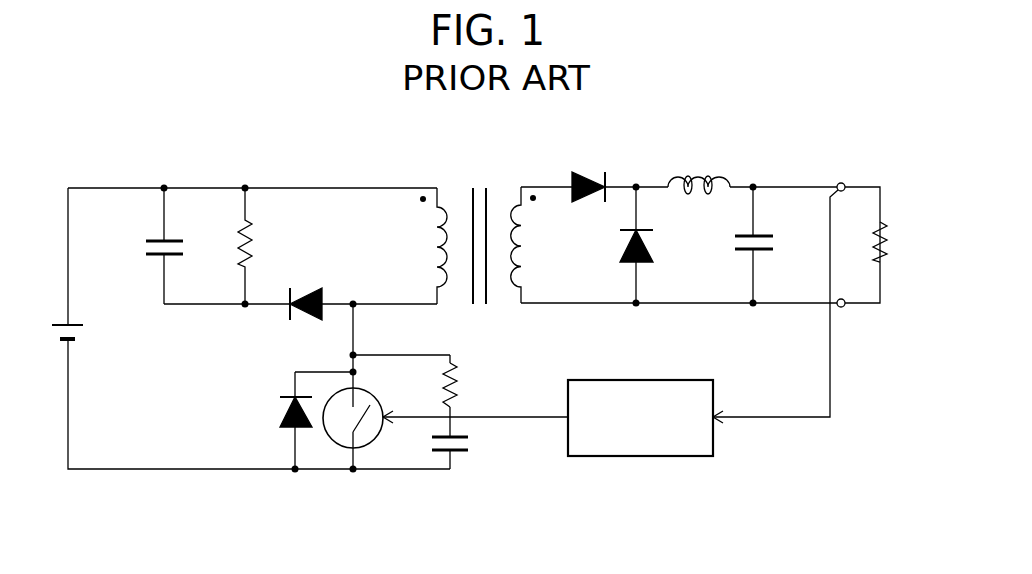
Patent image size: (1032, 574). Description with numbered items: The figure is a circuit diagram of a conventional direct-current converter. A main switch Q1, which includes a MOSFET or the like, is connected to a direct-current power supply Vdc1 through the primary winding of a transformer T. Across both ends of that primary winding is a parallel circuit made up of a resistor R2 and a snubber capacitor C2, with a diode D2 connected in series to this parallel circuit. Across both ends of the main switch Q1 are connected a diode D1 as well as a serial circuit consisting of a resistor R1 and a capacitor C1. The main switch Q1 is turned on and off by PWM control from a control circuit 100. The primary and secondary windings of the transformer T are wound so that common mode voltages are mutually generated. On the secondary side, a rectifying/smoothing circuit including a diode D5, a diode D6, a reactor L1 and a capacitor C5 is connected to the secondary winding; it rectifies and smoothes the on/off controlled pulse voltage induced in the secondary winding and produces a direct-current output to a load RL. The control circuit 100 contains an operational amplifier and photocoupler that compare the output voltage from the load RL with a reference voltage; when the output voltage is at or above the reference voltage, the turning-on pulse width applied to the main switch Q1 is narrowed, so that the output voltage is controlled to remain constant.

The control circuit 100 is at (670, 378).
The direct-current power supply Vdc1 is at (99, 337).
The snubber capacitor C2 is at (148, 246).
The resistor R2 is at (264, 246).
The diode D2 is at (306, 320).
The transformer T is at (479, 230).
The diode D5 is at (589, 171).
The diode D6 is at (654, 246).
The reactor L1 is at (699, 171).
The capacitor C5 is at (771, 243).
The load RL is at (898, 242).
The diode D1 is at (280, 413).
The main switch Q1 is at (366, 425).
The resistor R1 is at (468, 385).
The capacitor C1 is at (466, 449).